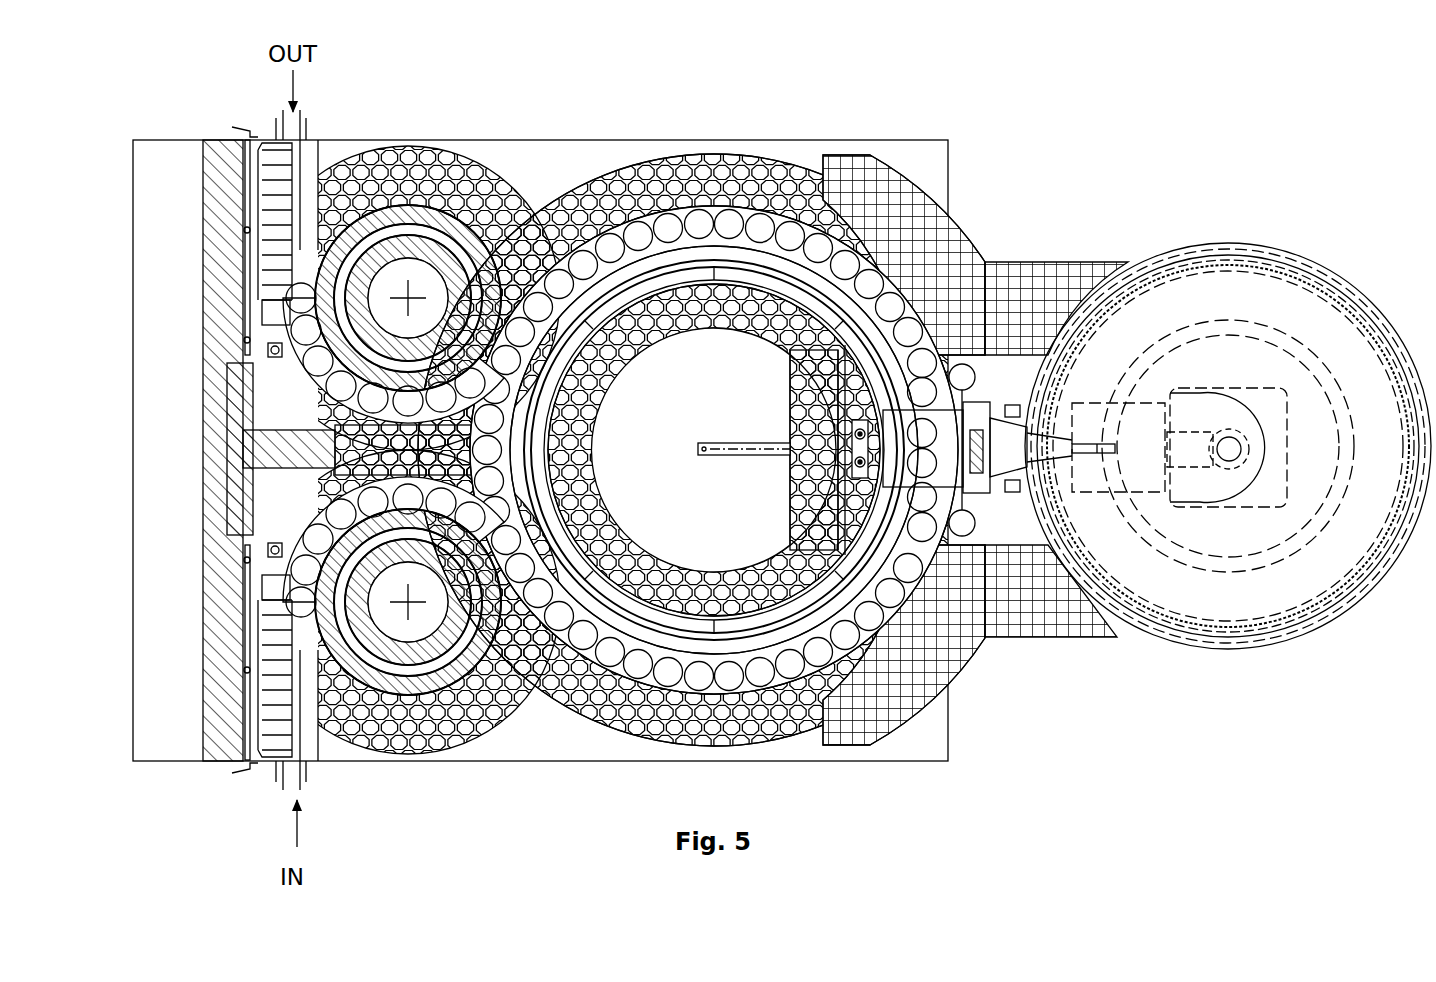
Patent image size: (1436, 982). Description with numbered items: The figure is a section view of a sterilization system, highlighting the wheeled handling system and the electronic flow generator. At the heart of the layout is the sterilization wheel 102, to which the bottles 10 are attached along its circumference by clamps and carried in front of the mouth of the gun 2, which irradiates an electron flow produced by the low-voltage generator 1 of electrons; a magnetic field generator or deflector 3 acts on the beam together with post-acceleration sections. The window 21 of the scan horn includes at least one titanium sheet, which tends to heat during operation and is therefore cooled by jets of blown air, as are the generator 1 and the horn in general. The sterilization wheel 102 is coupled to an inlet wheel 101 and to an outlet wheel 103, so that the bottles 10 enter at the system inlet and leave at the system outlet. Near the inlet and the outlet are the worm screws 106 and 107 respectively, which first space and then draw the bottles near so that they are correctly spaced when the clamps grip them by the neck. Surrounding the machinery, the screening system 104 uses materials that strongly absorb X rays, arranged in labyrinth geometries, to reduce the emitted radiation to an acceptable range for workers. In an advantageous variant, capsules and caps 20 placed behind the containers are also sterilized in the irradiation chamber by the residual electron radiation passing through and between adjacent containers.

The generator 1 is at (1302, 597).
The gun 2 is at (1003, 458).
The magnetic field generator or deflector 3 is at (1013, 497).
The bottle 10 is at (755, 672).
The capsules and caps 20 is at (870, 465).
The window 21 is at (982, 415).
The inlet wheel 101 is at (385, 655).
The sterilization wheel 102 is at (713, 290).
The outlet wheel 103 is at (417, 245).
The screening system 104 is at (400, 160).
The worm screw 106 is at (265, 705).
The worm screw 107 is at (270, 215).